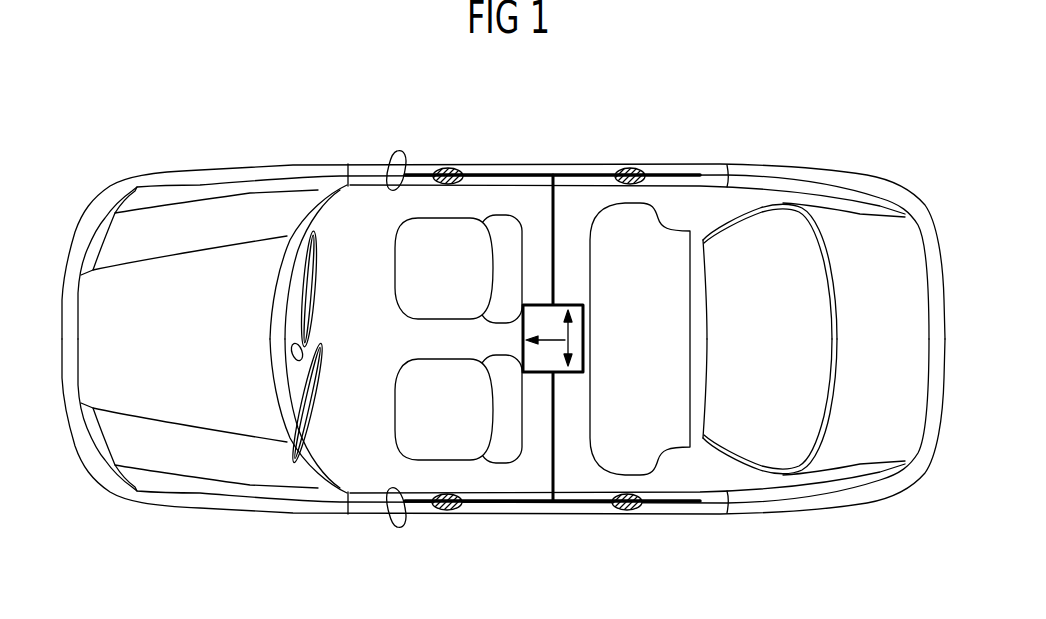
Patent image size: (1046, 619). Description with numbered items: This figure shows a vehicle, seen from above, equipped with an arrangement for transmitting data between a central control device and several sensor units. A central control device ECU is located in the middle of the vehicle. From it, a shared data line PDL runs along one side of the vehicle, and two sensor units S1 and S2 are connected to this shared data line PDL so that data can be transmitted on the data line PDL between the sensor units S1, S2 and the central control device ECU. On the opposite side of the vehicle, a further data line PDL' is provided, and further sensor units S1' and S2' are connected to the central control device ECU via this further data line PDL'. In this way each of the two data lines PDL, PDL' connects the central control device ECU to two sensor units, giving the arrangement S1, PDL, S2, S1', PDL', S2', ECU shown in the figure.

The sensor unit S1 is at (447, 137).
The sensor unit S2 is at (629, 137).
The data line PDL is at (552, 197).
The further sensor unit S1' is at (446, 542).
The further sensor unit S2' is at (626, 542).
The further data line PDL' is at (552, 482).
The central control device ECU is at (585, 341).